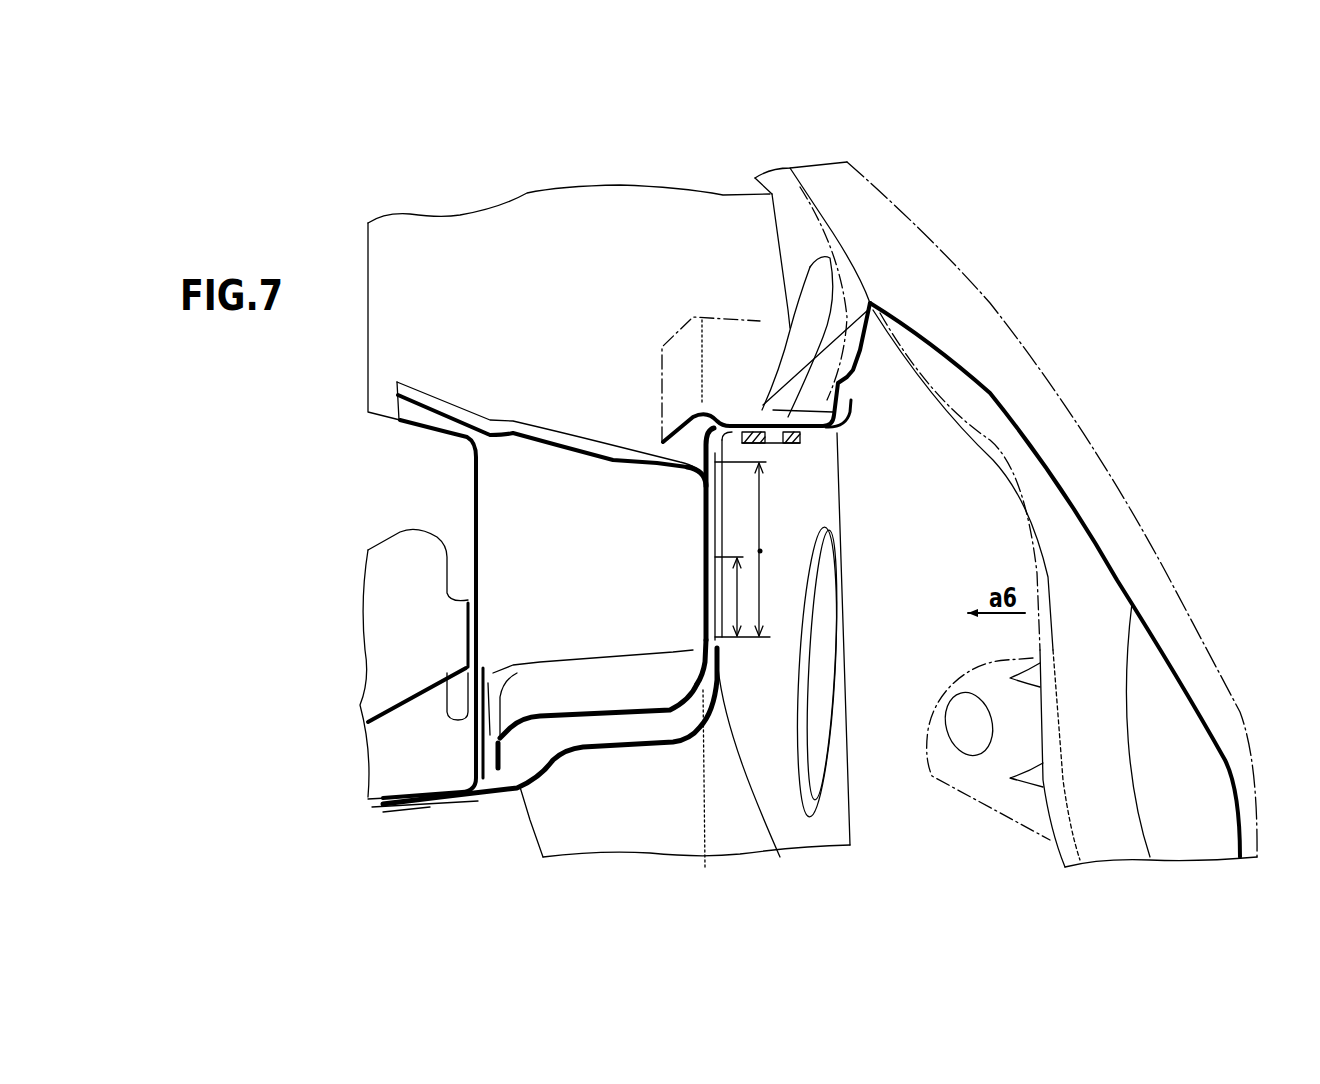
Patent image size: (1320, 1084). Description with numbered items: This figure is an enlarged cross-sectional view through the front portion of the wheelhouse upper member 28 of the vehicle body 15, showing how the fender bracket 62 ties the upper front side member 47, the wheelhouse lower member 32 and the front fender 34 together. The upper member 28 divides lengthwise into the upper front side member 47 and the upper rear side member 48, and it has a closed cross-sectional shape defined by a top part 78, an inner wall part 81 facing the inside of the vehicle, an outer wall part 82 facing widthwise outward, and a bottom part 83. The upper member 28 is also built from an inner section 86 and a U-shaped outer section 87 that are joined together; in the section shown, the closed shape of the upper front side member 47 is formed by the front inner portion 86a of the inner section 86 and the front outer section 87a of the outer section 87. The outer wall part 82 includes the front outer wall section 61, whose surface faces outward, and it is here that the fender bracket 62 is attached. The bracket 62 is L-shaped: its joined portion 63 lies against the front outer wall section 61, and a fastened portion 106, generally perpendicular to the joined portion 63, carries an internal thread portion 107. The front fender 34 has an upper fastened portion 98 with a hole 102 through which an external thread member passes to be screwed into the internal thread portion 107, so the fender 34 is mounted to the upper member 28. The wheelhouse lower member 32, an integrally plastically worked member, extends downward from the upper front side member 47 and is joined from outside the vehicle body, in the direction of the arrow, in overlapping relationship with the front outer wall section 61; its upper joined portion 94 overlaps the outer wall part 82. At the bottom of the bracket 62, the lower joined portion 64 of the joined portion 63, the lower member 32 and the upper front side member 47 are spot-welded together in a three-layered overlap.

The vehicle body side structure 15 is at (403, 185).
The wheelhouse upper member 28 is at (465, 198).
The upper front side member 47 is at (531, 418).
The outer section 87 is at (578, 268).
The upper rear side member 48 is at (623, 186).
The top part 78 is at (660, 247).
The upper fastened portion 98 is at (758, 323).
The hole 102 is at (771, 373).
The front fender 34 is at (1086, 418).
The inner section 86 is at (456, 465).
The inner wall part 81 is at (470, 519).
The front inner portion 86a is at (433, 609).
The front outer wall section 61 is at (703, 517).
The outer wall part 82 is at (701, 534).
The fender bracket 62 is at (822, 448).
The internal thread portion 107 is at (777, 441).
The fastened portion 106 is at (813, 441).
The joined portion 63 is at (761, 551).
The lower joined portion 64 is at (738, 596).
The upper joined portion 94 is at (717, 670).
The wheelhouse lower member 32 is at (593, 758).
The bottom part 83 is at (613, 730).
The front outer section 87a is at (686, 738).